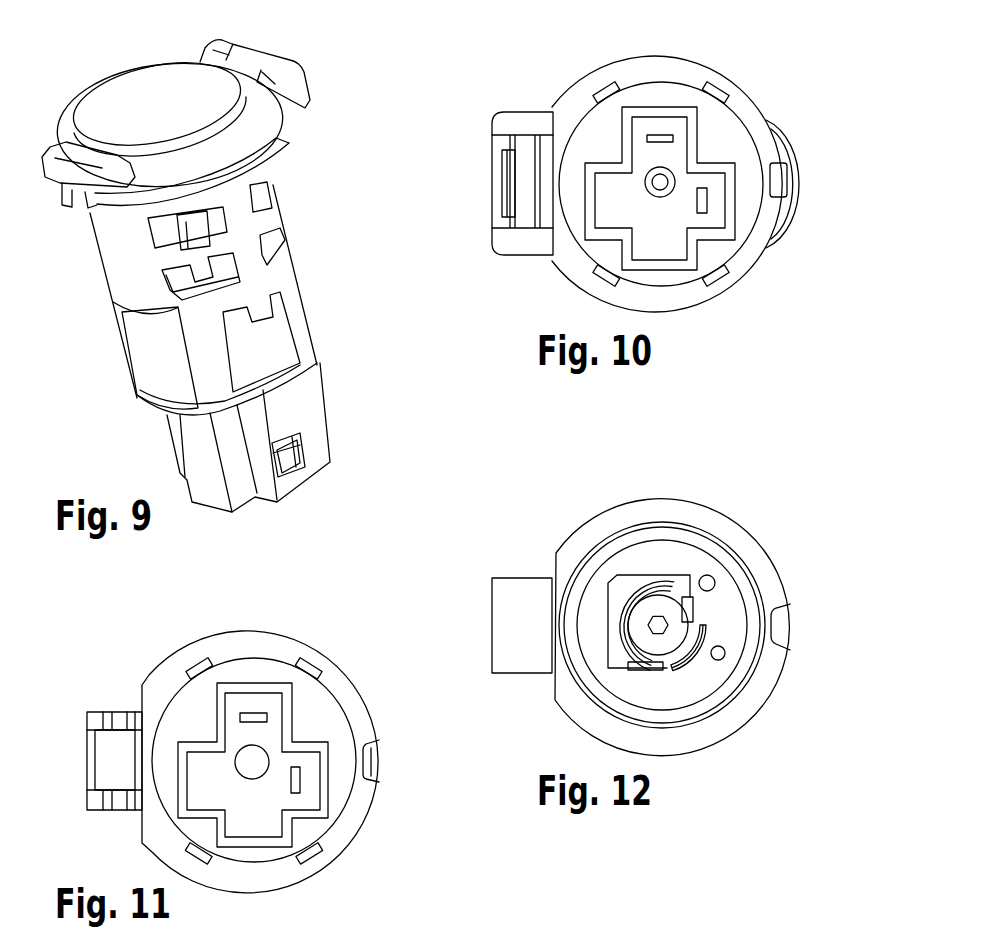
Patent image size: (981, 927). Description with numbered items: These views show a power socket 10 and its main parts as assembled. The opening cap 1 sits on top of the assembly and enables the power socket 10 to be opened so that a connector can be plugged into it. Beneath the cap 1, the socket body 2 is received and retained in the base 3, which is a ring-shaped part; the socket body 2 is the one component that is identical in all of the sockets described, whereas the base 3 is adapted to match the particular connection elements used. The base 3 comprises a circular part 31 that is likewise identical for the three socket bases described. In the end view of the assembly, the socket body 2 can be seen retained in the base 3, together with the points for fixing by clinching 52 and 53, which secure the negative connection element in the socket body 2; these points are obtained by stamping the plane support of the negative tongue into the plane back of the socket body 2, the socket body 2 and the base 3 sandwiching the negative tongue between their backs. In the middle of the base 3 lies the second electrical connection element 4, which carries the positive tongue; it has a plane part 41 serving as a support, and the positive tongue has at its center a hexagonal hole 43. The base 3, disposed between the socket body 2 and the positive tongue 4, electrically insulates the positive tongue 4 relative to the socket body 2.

In FIG. 9, the power socket 10 is at (333, 126).
In FIG. 9, the opening cap 1 is at (125, 102).
In FIG. 10, the opening cap 1 is at (530, 122).
In FIG. 9, the socket body 2 is at (277, 343).
In FIG. 12, the socket body 2 is at (600, 555).
In FIG. 9, the base 3 is at (290, 261).
In FIG. 10, the base 3 is at (680, 66).
In FIG. 11, the base 3 is at (270, 632).
In FIG. 12, the base 3 is at (623, 503).
In FIG. 11, the circular part 31 is at (350, 693).
In FIG. 12, the circular part 31 is at (707, 520).
In FIG. 12, the second electrical connection element 4 is at (651, 686).
In FIG. 12, the plane part 41 is at (637, 637).
In FIG. 12, the hexagonal hole 43 is at (666, 632).
In FIG. 12, the point for fixing by clinching 52 is at (725, 658).
In FIG. 12, the point for fixing by clinching 53 is at (708, 580).